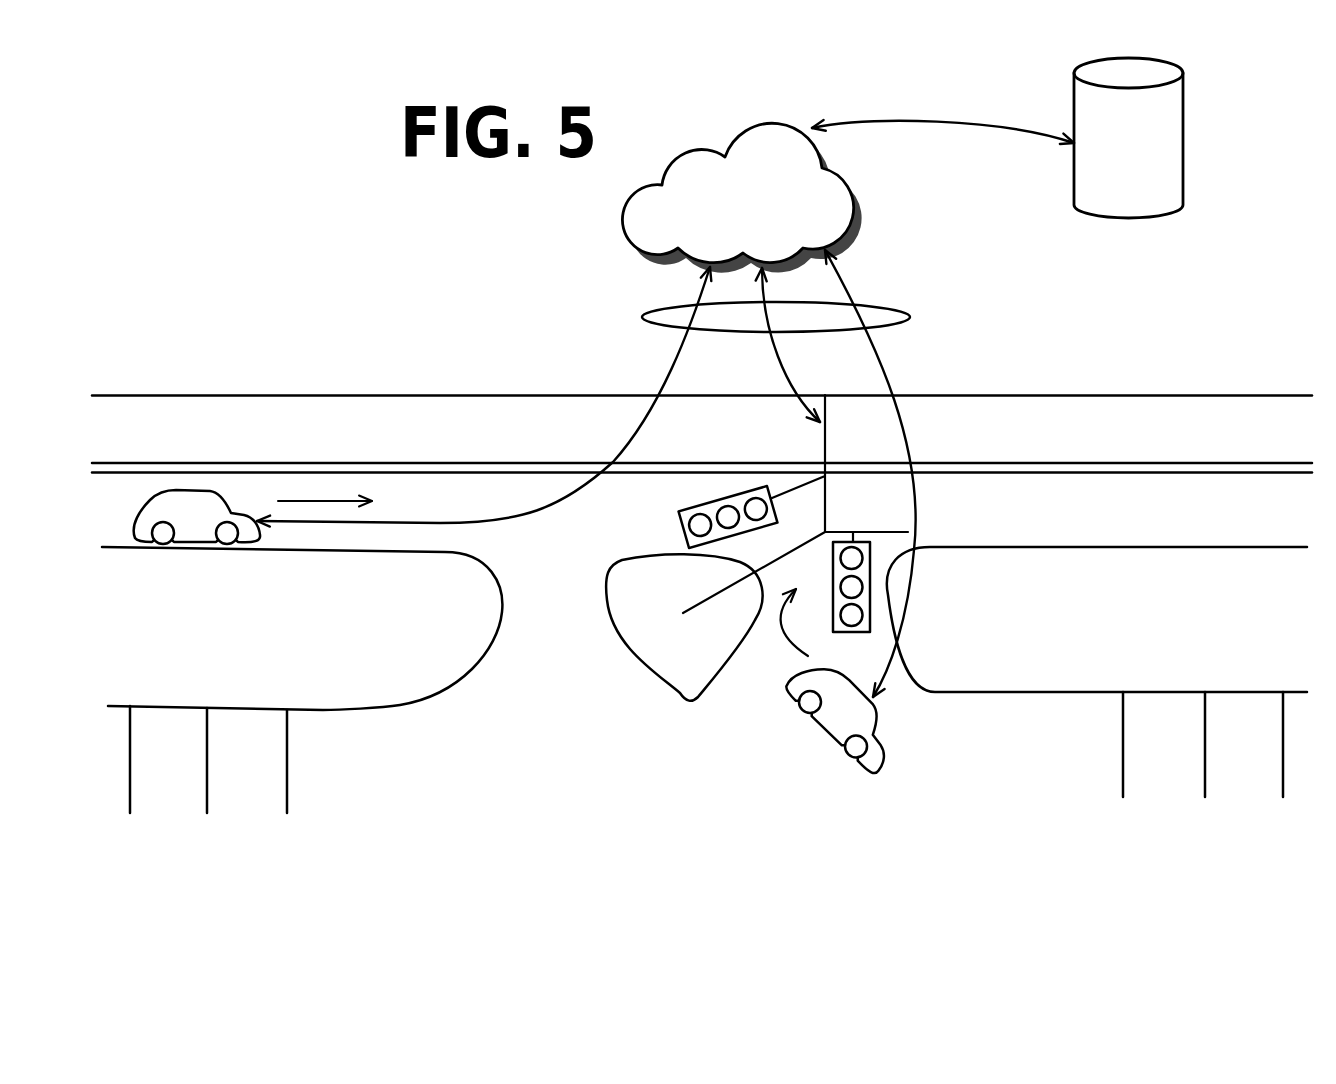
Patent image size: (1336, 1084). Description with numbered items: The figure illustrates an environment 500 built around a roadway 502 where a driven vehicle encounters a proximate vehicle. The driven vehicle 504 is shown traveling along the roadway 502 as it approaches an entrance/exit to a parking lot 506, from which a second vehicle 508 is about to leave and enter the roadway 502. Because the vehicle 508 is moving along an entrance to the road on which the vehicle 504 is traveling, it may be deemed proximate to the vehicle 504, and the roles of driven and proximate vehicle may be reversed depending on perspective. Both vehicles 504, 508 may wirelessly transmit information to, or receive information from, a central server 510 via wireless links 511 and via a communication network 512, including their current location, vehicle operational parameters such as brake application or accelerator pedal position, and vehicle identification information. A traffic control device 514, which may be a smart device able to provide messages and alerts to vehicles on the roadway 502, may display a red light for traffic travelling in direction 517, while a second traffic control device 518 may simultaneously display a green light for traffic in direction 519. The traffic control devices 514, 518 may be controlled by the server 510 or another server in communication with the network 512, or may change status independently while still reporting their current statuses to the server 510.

The environment 500 is at (280, 215).
The roadway 502 is at (982, 585).
The driven vehicle 504 is at (197, 517).
The parking lot 506 is at (1092, 810).
The vehicle 508 is at (845, 714).
The central server 510 is at (1183, 118).
The wireless links 511 is at (910, 317).
The communication network 512 is at (862, 225).
The traffic control device 514 is at (720, 514).
The direction 517 is at (325, 491).
The traffic control device 518 is at (854, 601).
The direction 519 is at (779, 626).